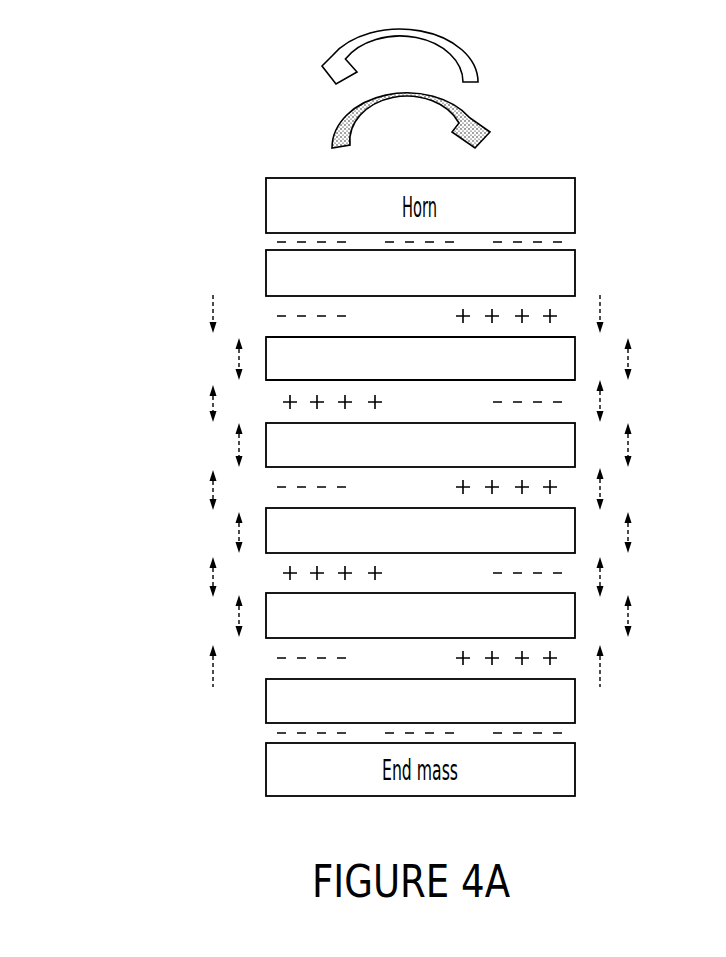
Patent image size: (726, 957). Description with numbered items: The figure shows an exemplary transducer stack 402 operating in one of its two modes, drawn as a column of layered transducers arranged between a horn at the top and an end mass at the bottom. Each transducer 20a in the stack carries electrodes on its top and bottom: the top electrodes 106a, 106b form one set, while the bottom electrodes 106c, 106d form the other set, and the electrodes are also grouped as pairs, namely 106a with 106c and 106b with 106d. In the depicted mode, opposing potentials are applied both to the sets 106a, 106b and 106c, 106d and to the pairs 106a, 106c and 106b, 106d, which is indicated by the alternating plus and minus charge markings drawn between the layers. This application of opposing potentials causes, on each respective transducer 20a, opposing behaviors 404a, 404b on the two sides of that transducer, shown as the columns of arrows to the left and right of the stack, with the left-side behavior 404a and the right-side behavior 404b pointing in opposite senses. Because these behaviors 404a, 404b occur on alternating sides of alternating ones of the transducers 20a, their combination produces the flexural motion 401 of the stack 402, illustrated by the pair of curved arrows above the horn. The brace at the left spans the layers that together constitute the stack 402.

The flexural motion 401 is at (502, 123).
The transducer stack 402 is at (143, 287).
The transducer 20a is at (575, 358).
The top electrode 106a is at (293, 337).
The top electrode 106b is at (548, 337).
The bottom electrode 106c is at (330, 380).
The bottom electrode 106d is at (550, 380).
The opposing behavior 404a is at (236, 445).
The opposing behavior 404b is at (602, 307).